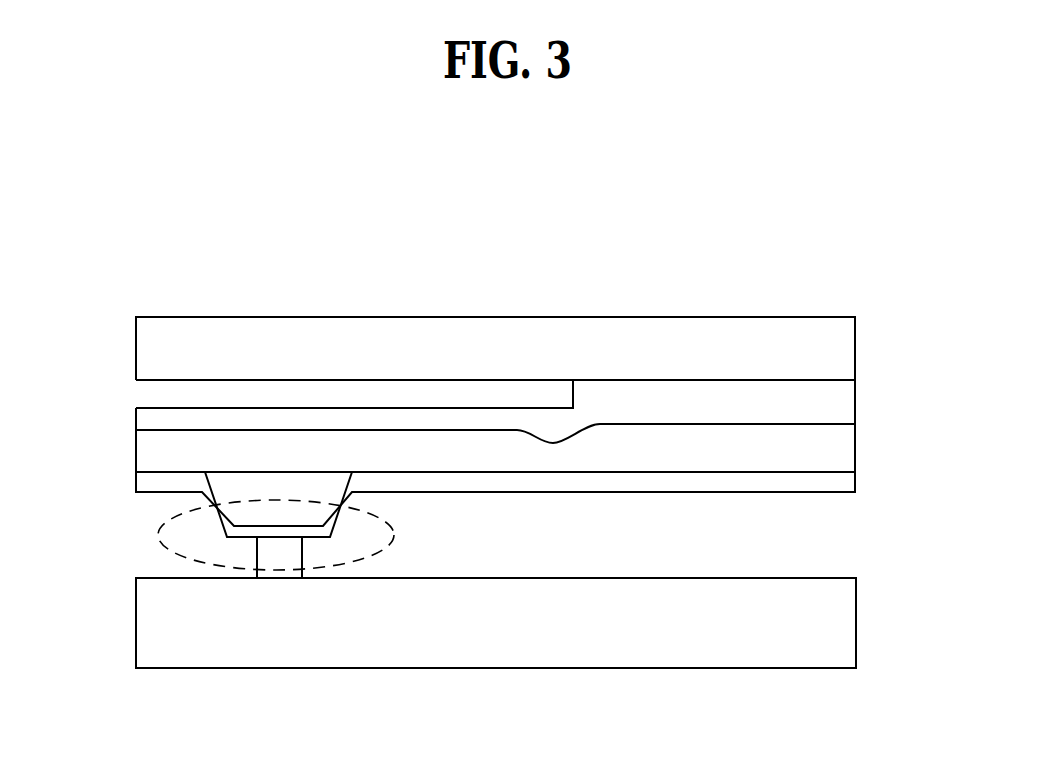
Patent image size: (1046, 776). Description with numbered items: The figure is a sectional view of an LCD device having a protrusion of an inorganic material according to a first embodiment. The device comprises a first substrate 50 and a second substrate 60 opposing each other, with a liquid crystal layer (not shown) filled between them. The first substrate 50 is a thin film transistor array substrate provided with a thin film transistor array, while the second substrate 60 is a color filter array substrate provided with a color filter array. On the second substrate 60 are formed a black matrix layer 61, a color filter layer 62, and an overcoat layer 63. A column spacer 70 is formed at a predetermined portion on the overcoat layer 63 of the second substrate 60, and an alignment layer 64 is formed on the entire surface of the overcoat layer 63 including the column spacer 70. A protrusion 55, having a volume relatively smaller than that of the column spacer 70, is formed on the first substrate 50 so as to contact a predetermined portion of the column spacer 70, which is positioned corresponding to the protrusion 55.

The first substrate 50 is at (843, 617).
The protrusion 55 is at (253, 563).
The second substrate 60 is at (845, 349).
The black matrix layer 61 is at (147, 392).
The color filter layer 62 is at (845, 402).
The overcoat layer 63 is at (845, 450).
The alignment layer 64 is at (845, 482).
The column spacer 70 is at (242, 477).